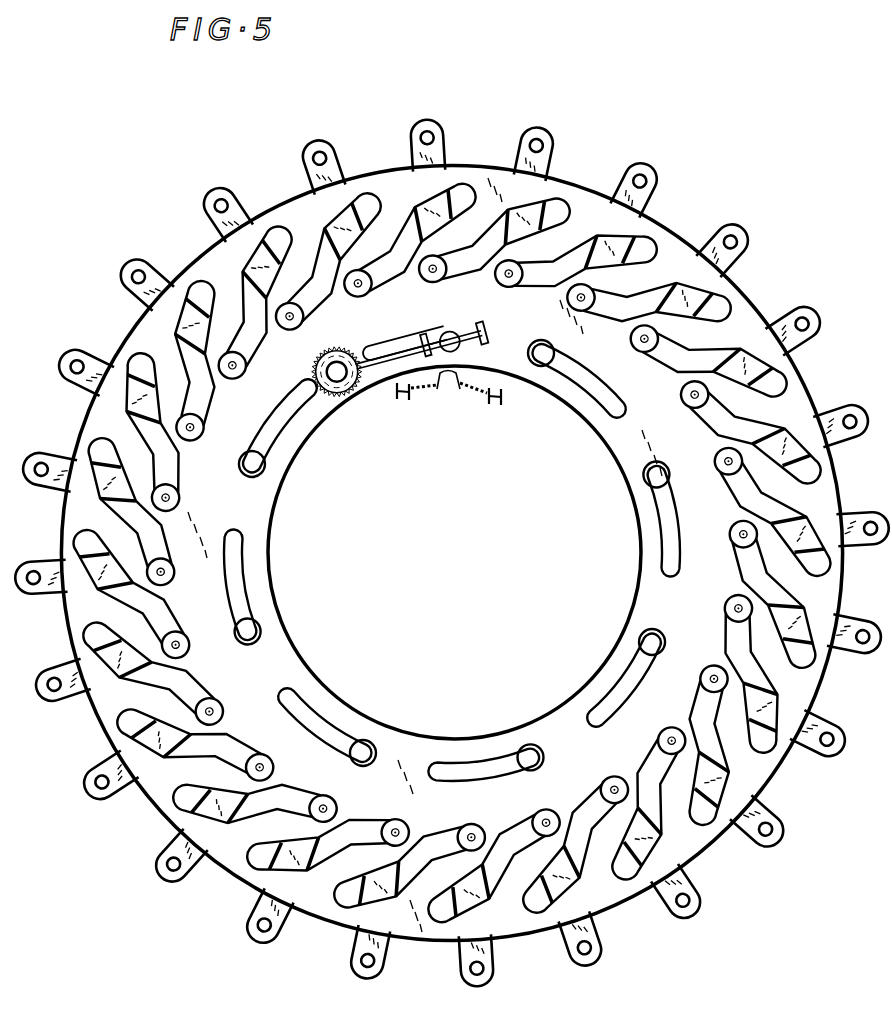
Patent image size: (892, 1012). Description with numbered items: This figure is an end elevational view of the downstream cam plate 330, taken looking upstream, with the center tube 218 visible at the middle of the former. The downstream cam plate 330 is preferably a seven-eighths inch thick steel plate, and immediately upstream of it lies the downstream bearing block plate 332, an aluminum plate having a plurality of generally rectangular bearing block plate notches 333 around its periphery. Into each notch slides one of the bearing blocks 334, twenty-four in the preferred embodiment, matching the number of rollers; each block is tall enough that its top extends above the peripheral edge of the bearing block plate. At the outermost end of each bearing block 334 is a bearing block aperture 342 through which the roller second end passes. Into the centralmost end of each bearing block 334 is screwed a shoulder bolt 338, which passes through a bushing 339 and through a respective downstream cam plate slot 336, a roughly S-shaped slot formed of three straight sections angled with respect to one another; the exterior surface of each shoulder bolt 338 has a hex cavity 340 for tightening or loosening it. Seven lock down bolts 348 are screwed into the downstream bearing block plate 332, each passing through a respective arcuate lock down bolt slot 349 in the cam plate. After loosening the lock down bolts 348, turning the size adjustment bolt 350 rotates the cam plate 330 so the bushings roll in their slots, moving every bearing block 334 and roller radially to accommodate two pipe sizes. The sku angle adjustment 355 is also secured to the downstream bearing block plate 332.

The center tube 218 is at (388, 388).
The downstream cam plate 330 is at (451, 527).
The downstream bearing block plate 332 is at (200, 247).
The bearing block plate notches 333 is at (252, 218).
The bearing blocks 334 is at (205, 190).
The downstream cam plate slot 336 is at (555, 205).
The shoulder bolt 338 is at (808, 342).
The bushing 339 is at (715, 216).
The hex cavity 340 is at (735, 313).
The bearing block aperture 342 is at (197, 199).
The lock down bolts 348 is at (266, 625).
The arcuate lock down bolt slot 349 is at (268, 535).
The size adjustment bolt 350 is at (510, 385).
The sku angle adjustment 355 is at (432, 402).